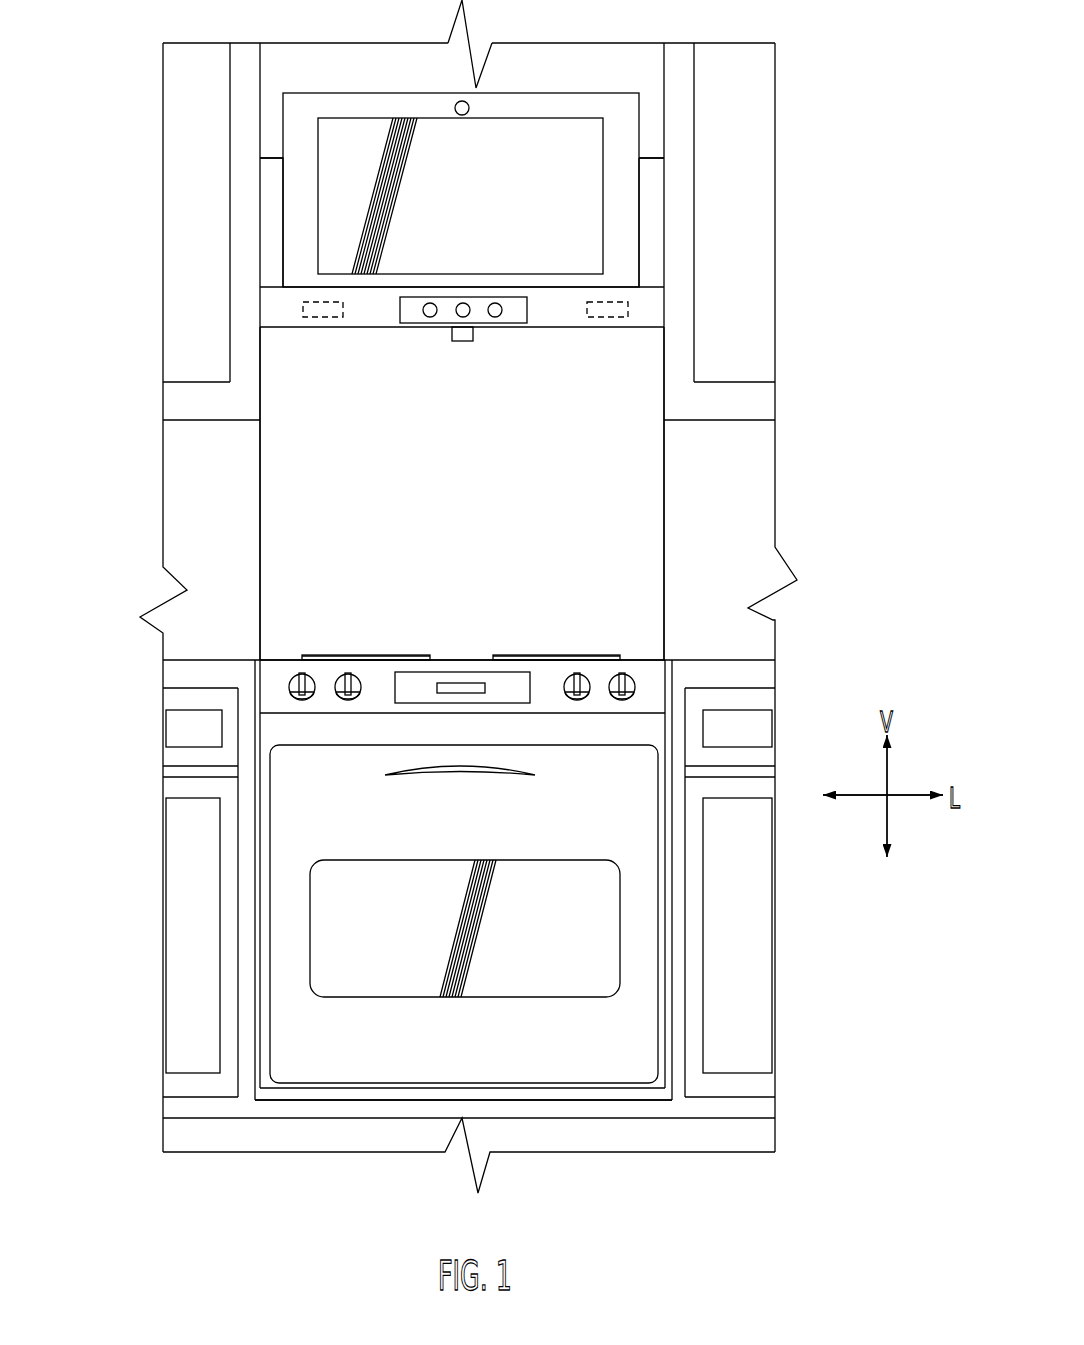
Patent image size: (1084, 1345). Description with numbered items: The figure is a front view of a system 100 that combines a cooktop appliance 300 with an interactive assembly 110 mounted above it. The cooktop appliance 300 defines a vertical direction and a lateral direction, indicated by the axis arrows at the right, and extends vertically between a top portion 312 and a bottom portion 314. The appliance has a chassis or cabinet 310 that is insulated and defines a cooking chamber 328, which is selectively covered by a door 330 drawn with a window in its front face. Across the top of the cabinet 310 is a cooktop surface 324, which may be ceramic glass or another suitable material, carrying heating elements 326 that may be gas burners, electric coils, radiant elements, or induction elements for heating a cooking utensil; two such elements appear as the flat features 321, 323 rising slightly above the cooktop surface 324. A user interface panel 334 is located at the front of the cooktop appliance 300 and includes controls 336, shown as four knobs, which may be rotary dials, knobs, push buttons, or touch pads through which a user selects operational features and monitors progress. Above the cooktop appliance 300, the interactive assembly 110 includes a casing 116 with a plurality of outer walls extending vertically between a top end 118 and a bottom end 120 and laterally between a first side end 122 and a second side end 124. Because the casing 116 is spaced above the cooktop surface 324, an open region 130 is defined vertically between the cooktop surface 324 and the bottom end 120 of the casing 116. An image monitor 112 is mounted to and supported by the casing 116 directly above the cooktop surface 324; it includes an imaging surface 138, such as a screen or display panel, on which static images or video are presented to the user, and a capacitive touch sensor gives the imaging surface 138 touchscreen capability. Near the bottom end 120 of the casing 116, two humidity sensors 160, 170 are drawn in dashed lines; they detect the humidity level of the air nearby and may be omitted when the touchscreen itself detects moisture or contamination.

The system 100 is at (107, 108).
The interactive assembly 110 is at (502, 202).
The image monitor 112 is at (623, 118).
The casing 116 is at (638, 313).
The top end 118 is at (387, 95).
The bottom end 120 is at (565, 330).
The first side end 122 is at (663, 275).
The second side end 124 is at (260, 258).
The open region 130 is at (407, 496).
The imaging surface 138 is at (340, 207).
The humidity sensor 160 is at (625, 317).
The humidity sensor 170 is at (323, 317).
The cooktop appliance 300 is at (458, 877).
The cabinet 310 is at (253, 1088).
The top portion 312 is at (253, 658).
The bottom portion 314 is at (309, 1098).
The heating element 321 is at (513, 655).
The heating element 323 is at (327, 653).
The cooktop surface 324 is at (287, 662).
The heating element 326 is at (368, 657).
The cooking chamber 328 is at (403, 933).
The door 330 is at (640, 920).
The user interface panel 334 is at (648, 672).
The controls 336 is at (637, 690).